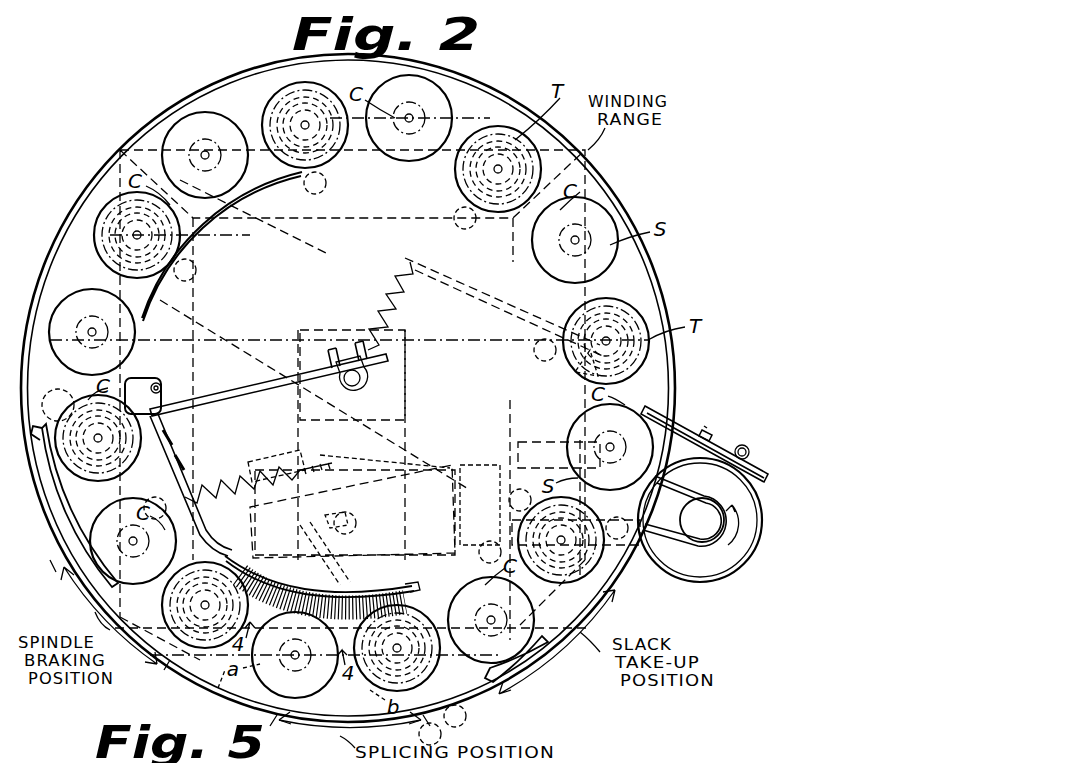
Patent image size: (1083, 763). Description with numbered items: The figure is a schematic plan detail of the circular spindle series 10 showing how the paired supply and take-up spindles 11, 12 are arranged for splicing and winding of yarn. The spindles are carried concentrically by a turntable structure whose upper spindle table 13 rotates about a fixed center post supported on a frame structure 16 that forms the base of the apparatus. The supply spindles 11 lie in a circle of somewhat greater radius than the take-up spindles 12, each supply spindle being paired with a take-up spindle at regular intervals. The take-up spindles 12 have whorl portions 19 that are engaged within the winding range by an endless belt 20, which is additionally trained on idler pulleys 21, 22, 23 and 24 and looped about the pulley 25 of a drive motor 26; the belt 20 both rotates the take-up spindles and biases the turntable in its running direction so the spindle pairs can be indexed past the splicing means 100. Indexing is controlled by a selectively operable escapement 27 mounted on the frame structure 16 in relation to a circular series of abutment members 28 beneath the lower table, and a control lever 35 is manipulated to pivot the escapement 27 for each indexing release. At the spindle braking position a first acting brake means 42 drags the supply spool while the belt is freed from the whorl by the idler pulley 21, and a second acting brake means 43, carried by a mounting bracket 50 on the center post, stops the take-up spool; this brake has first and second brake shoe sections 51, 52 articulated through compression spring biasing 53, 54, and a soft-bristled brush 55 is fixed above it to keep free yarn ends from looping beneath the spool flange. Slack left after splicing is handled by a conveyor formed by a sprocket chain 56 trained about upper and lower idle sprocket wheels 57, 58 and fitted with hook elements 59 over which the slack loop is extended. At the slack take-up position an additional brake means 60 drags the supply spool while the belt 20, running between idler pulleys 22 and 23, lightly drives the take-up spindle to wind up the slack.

The circular spindle series 10 is at (634, 206).
The supply spindle 11 is at (580, 242).
The take-up spindle 12 is at (494, 171).
The upper spindle table 13 is at (667, 290).
The frame structure 16 is at (193, 318).
The whorl portion 19 is at (578, 368).
The endless belt 20 is at (672, 534).
The idler pulley 21 is at (220, 690).
The idler pulley 22 is at (337, 726).
The idler pulley 23 is at (625, 588).
The idler pulley 24 is at (676, 460).
The pulley 25 is at (686, 510).
The drive motor 26 is at (718, 580).
The escapement 27 is at (250, 460).
The abutment member 28 is at (534, 352).
The control lever 35 is at (468, 715).
The first acting brake means 42 is at (62, 520).
The second acting brake means 43 is at (210, 403).
The mounting bracket 50 is at (222, 402).
The first brake shoe section 51 is at (180, 458).
The second brake shoe section 52 is at (415, 590).
The compression spring biasing 53 is at (235, 478).
The compression spring biasing 54 is at (285, 578).
The soft-bristled brush 55 is at (325, 588).
The sprocket chain 56 is at (340, 522).
The upper idle sprocket wheel 57 is at (56, 392).
The lower idle sprocket wheel 58 is at (482, 515).
The hook element 59 is at (150, 500).
The additional brake means 60 is at (515, 674).
The splicing means 100 is at (408, 421).